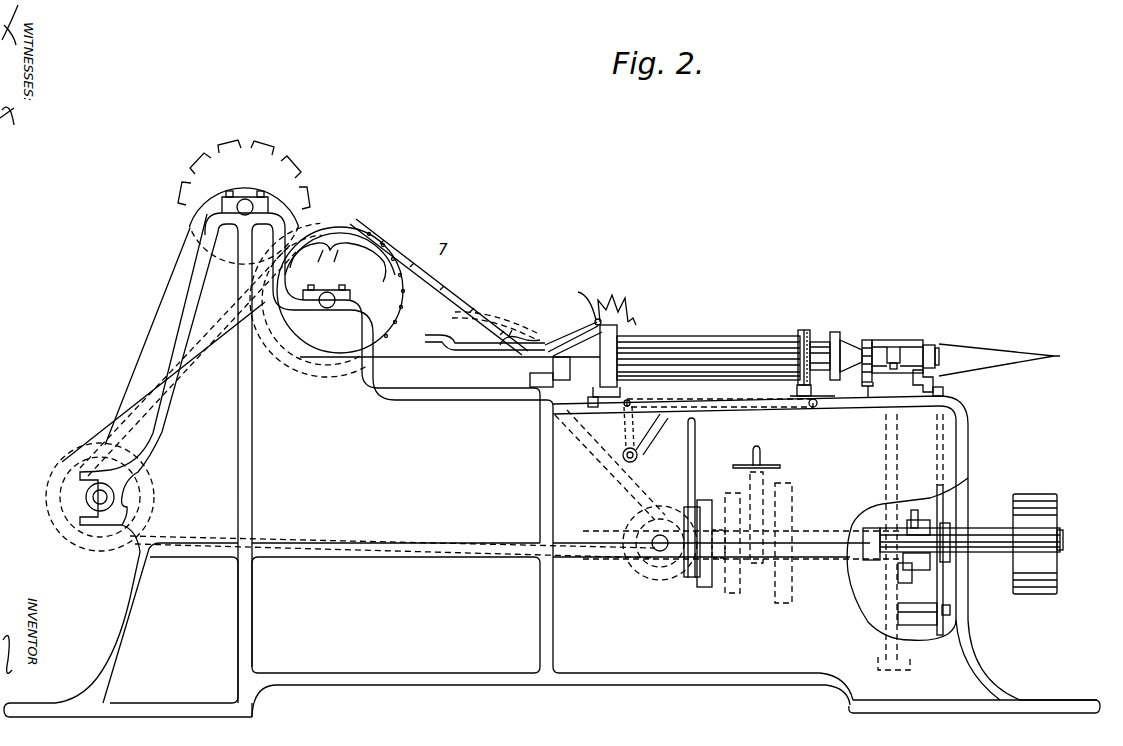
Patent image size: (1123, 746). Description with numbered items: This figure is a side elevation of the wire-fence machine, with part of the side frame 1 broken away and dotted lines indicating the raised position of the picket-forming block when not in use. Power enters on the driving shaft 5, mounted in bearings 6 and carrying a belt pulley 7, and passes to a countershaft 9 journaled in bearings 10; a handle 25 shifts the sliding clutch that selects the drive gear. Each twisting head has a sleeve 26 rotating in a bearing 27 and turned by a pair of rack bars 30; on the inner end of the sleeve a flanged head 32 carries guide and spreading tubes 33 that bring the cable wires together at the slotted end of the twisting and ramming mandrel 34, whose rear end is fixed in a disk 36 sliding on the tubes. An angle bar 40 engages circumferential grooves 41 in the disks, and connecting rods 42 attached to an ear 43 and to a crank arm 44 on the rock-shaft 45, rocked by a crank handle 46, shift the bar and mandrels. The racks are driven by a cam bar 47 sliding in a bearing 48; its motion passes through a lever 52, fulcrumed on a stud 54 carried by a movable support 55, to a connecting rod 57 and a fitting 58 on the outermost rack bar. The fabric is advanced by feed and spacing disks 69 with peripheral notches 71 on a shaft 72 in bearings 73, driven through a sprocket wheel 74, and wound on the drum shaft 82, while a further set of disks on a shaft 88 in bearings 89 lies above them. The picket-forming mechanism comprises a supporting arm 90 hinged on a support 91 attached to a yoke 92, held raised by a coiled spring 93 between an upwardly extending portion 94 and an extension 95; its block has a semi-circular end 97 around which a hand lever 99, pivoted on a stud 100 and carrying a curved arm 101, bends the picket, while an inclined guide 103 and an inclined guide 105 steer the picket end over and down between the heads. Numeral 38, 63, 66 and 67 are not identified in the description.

The side frame 1 is at (607, 660).
The driving shaft 5 is at (1064, 545).
The bearings 6 is at (895, 555).
The belt pulley 7 is at (1038, 494).
The countershaft 9 is at (1022, 356).
The bearings 10 is at (862, 568).
The handle 25 is at (762, 463).
The sleeve 26 is at (932, 346).
The bearing 27 is at (898, 342).
The rack bars 30 is at (917, 377).
The flanged head 32 is at (836, 333).
The guide and spreading tubes 33 is at (700, 340).
The twisting and ramming mandrel 34 is at (665, 360).
The disk 36 is at (800, 334).
The frame cross member 38 is at (542, 400).
The angle bar 40 is at (797, 390).
The circumferential grooves 41 is at (806, 330).
The connecting rods 42 is at (742, 408).
The ear 43 is at (816, 404).
The crank arm 44 is at (585, 440).
The rock-shaft 45 is at (643, 441).
The crank handle 46 is at (652, 435).
The cam bar 47 is at (920, 518).
The bearing 48 is at (903, 525).
The lever 52 is at (944, 503).
The stud 54 is at (951, 610).
The movable support 55 is at (918, 606).
The connecting rod 57 is at (943, 393).
The fitting 58 is at (935, 385).
The belt pulley 63 is at (95, 478).
The vertical bar 66 is at (695, 455).
The notched cam wheel 67 is at (268, 175).
The feed and spacing disks 69 is at (370, 273).
The peripheral notches 71 is at (338, 262).
The shaft 72 is at (320, 305).
The bearings 73 is at (338, 302).
The sprocket wheel 74 is at (346, 236).
The shaft 82 is at (93, 497).
The shaft 88 is at (222, 205).
The bearings 89 is at (268, 203).
The supporting arm 90 is at (580, 340).
The support 91 is at (603, 322).
The yoke 92 is at (607, 390).
The coiled spring 93 is at (618, 300).
The upwardly extending portion 94 is at (581, 300).
The extension 95 is at (632, 315).
The semi-circular end 97 is at (532, 372).
The hand lever 99 is at (460, 348).
The stud 100 is at (516, 338).
The curved arm 101 is at (450, 366).
The inclined guide 103 is at (590, 402).
The inclined guide 105 is at (595, 345).